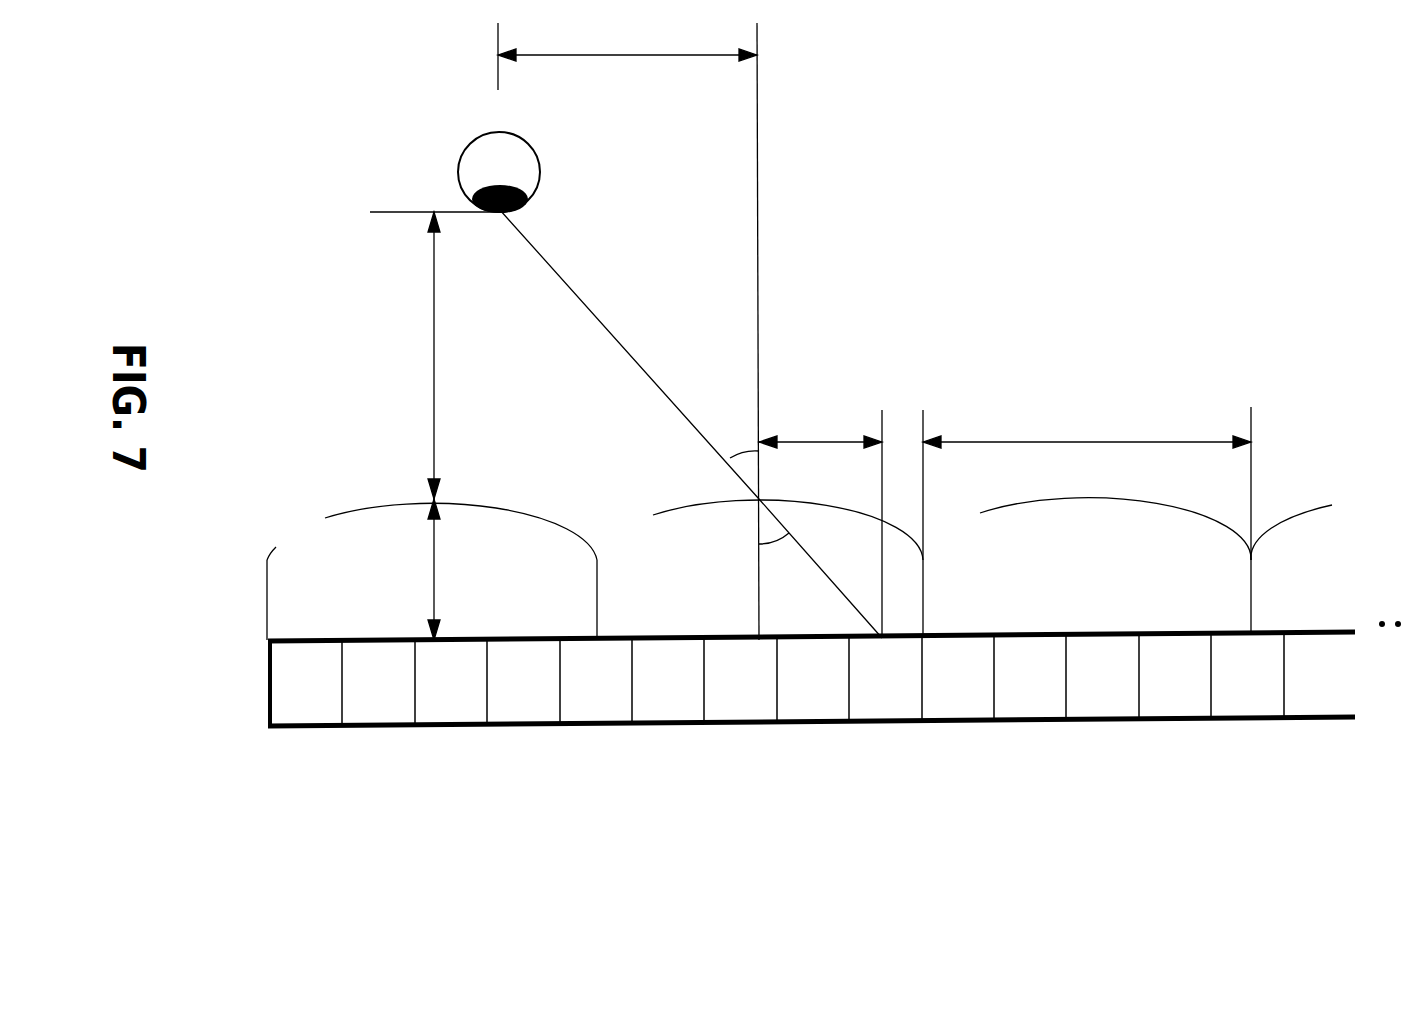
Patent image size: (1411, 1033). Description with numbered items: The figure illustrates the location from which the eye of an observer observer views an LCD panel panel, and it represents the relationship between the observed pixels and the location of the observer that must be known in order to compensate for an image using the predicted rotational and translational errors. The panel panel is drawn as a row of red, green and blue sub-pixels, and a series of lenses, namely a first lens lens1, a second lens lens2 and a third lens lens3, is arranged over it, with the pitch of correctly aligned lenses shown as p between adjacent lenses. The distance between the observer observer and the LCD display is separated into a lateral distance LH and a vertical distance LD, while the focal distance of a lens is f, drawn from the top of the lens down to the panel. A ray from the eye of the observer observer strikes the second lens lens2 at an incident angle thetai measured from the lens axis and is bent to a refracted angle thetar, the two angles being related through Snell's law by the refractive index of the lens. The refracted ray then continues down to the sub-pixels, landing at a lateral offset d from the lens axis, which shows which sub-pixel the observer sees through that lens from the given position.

The lateral distance LH is at (627, 55).
The vertical distance LD is at (418, 355).
The focal distance f is at (428, 569).
The lateral offset d is at (820, 520).
The lens pitch p is at (1087, 424).
The incident angle thetai is at (740, 437).
The refracted angle thetar is at (777, 557).
The element observer is at (500, 154).
The first lens lens1 is at (421, 571).
The second lens lens2 is at (761, 523).
The third lens lens3 is at (1096, 520).
The LCD panel is at (834, 706).